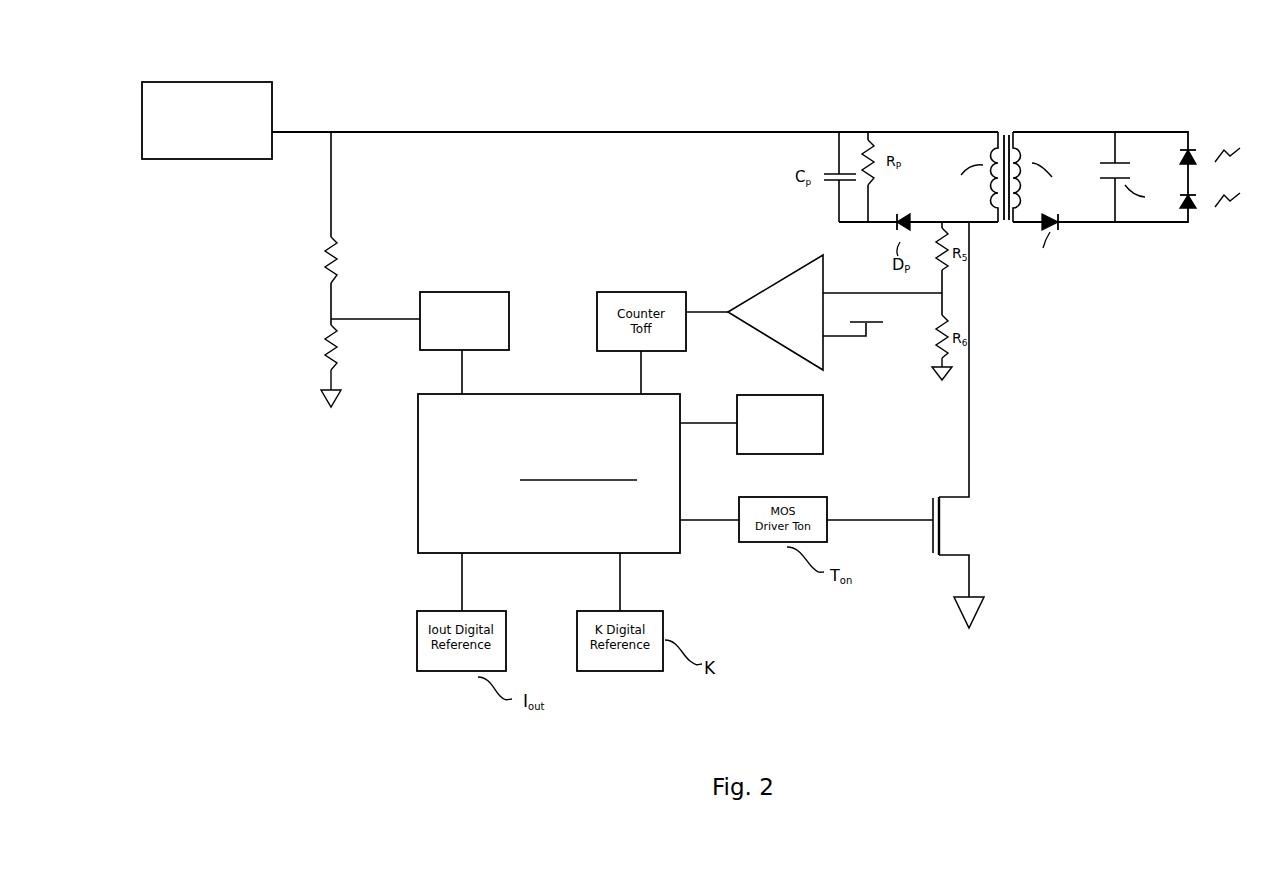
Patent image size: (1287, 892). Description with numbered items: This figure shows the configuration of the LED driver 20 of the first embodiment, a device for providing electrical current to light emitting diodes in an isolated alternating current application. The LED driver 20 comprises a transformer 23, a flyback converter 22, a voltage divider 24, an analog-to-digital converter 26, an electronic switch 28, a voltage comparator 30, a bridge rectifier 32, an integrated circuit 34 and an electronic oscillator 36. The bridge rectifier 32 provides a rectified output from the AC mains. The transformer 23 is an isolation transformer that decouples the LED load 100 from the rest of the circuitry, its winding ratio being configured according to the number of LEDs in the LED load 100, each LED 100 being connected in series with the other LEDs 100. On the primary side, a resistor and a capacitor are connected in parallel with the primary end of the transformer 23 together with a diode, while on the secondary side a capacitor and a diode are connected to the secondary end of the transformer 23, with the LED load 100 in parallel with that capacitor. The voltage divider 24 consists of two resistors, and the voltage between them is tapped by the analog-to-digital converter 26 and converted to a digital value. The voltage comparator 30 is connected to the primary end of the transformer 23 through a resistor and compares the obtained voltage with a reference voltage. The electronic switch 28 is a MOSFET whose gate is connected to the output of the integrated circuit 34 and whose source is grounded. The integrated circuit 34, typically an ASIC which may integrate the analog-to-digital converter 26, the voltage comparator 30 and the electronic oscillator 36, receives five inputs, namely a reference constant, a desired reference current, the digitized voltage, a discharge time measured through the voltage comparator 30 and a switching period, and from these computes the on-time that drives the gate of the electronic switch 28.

The LED driver 20 is at (1141, 173).
The flyback converter 22 is at (985, 232).
The transformer 23 is at (1005, 128).
The voltage divider 24 is at (322, 318).
The analog-to-digital converter 26 is at (470, 290).
The electronic switch 28 is at (968, 520).
The voltage comparator 30 is at (832, 357).
The bridge rectifier 32 is at (237, 167).
The integrated circuit 34 is at (412, 496).
The electronic oscillator 36 is at (828, 425).
The LED load 100 is at (1198, 143).